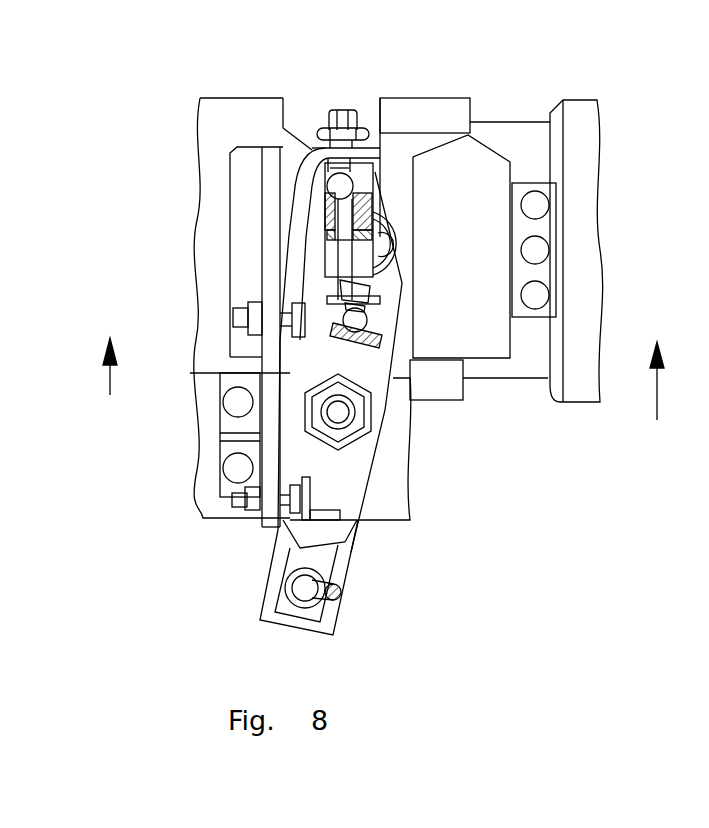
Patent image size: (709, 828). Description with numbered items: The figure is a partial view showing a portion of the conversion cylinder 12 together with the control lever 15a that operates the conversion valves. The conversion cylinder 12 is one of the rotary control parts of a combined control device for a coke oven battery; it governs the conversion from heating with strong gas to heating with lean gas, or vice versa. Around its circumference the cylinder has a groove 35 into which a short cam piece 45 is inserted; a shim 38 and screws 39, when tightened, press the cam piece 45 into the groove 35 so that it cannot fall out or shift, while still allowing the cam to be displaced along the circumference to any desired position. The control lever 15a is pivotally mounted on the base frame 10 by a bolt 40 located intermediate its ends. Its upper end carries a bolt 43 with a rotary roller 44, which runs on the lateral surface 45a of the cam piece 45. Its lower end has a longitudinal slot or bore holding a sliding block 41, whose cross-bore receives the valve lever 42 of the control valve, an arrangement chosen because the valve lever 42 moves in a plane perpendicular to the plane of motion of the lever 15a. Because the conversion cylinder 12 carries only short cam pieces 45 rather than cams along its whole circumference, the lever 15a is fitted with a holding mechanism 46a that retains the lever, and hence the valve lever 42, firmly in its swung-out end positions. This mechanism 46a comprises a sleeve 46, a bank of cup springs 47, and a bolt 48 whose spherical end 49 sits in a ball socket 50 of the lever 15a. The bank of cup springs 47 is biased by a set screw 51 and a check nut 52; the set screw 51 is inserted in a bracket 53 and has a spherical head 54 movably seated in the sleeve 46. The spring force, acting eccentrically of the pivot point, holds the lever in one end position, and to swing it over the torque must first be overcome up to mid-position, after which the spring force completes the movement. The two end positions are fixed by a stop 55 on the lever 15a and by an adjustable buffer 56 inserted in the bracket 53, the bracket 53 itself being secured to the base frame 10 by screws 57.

The base frame 10 is at (207, 483).
The conversion cylinder 12 is at (423, 112).
The control lever 15a is at (353, 473).
The groove 35 is at (520, 130).
The shim 38 is at (547, 273).
The screw 39 is at (543, 252).
The bolt 40 is at (347, 413).
The sliding block 41 is at (303, 560).
The valve lever 42 is at (340, 592).
The bolt 43 is at (385, 255).
The rotary roller 44 is at (400, 220).
The cam piece 45 is at (277, 142).
The lateral surface 45a is at (413, 167).
The sleeve 46 is at (327, 270).
The holding mechanism 46a is at (382, 199).
The bank of cup springs 47 is at (330, 235).
The bolt 48 is at (363, 300).
The spherical end 49 is at (378, 342).
The ball socket 50 is at (360, 328).
The set screw 51 is at (340, 118).
The check nut 52 is at (323, 135).
The bracket 53 is at (313, 153).
The spherical head 54 is at (338, 185).
The stop 55 is at (290, 310).
The adjustable buffer 56 is at (285, 327).
The screw 57 is at (232, 470).